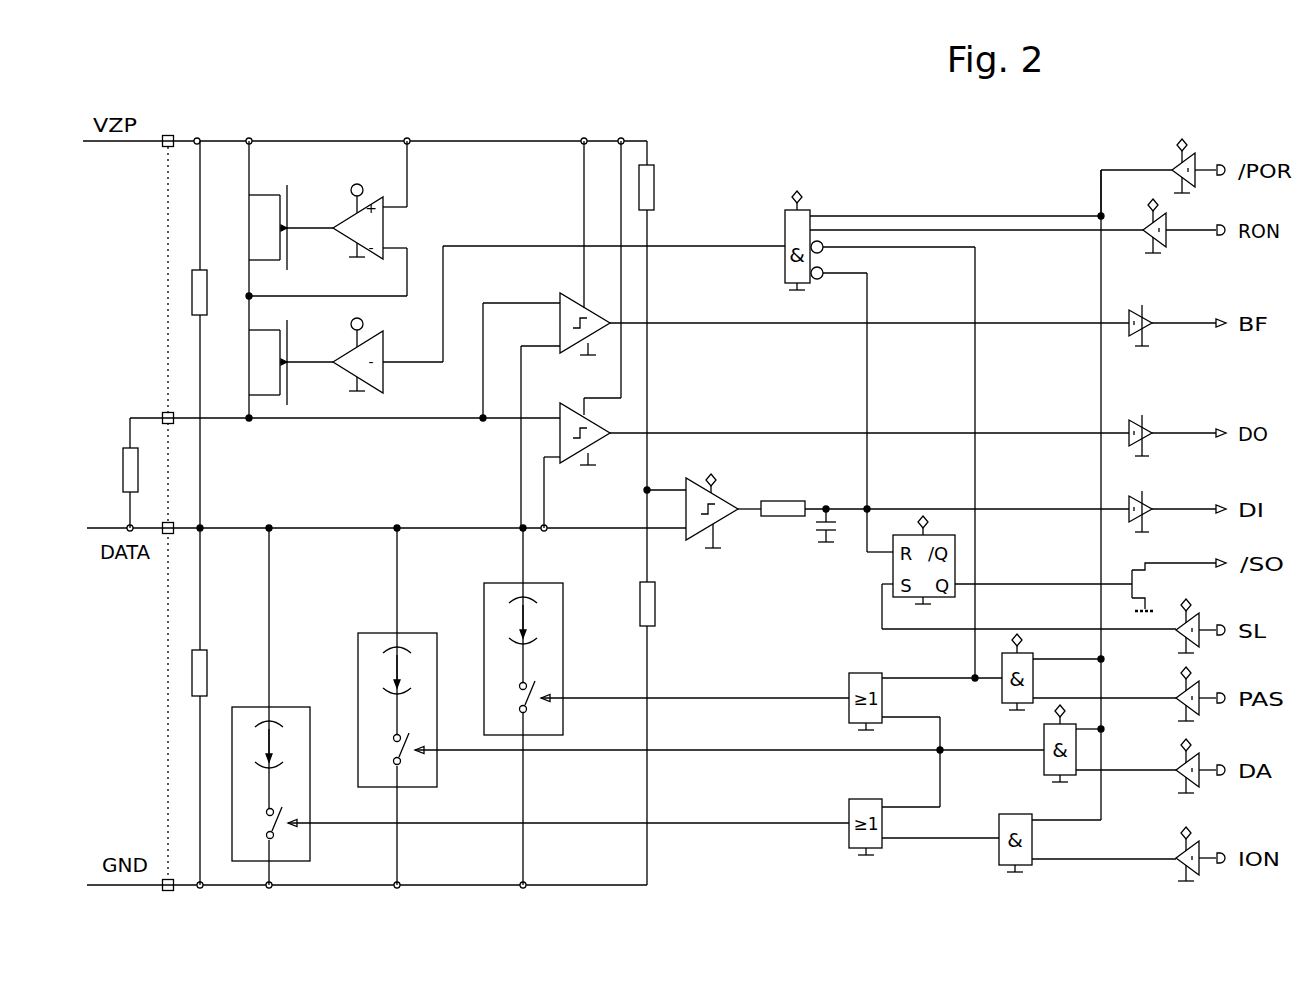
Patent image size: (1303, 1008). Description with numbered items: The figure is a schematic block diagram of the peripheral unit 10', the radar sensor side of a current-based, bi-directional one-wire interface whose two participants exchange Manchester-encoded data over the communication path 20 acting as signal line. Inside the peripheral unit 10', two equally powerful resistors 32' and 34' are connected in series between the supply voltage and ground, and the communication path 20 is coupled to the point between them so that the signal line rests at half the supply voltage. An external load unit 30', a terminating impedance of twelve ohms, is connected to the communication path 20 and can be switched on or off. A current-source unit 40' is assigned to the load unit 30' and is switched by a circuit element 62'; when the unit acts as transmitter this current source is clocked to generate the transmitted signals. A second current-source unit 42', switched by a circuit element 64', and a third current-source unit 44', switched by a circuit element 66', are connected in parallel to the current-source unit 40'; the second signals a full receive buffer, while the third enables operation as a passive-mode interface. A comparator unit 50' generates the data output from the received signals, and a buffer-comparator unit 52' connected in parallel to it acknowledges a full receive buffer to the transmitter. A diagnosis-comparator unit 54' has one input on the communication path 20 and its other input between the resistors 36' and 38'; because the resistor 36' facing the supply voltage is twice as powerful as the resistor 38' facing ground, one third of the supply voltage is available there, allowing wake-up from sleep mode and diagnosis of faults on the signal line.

The peripheral unit 10' is at (175, 462).
The communication path 20 is at (105, 528).
The load unit 30' is at (106, 466).
The resistor 32' is at (164, 395).
The resistor 34' is at (158, 759).
The resistor 36' is at (684, 361).
The resistor 38' is at (674, 733).
The current-source unit 40' is at (274, 706).
The second current-source unit 42' is at (400, 706).
The third current-source unit 44' is at (550, 706).
The comparator unit 50' is at (582, 334).
The buffer-comparator unit 52' is at (546, 334).
The diagnosis-comparator unit 54' is at (888, 503).
The circuit element 62' is at (197, 810).
The circuit element 64' is at (363, 770).
The circuit element 66' is at (487, 699).